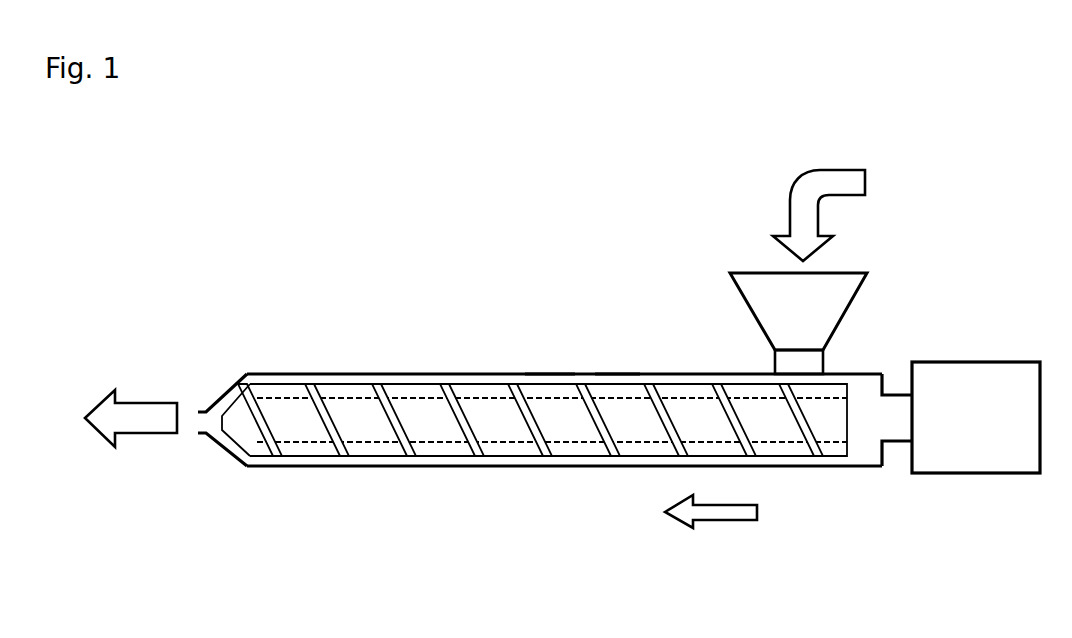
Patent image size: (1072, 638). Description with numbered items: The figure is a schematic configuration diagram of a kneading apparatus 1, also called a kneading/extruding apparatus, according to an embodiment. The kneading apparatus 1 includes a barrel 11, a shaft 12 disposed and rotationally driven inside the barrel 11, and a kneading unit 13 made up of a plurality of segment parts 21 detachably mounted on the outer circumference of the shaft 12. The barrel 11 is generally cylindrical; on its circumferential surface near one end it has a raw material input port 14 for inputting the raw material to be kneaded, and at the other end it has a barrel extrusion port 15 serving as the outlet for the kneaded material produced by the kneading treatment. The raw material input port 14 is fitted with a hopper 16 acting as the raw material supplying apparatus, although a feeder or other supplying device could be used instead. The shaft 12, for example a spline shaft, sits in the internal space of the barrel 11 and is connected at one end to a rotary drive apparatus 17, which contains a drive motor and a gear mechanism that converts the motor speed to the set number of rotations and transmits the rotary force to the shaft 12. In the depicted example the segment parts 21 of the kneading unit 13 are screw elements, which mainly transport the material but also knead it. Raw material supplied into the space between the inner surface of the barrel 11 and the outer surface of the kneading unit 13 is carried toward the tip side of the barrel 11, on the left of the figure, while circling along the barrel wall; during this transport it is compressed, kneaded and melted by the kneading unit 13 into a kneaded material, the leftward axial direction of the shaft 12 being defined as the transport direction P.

The kneading apparatus 1 is at (911, 186).
The barrel 11 is at (413, 374).
The shaft 12 is at (577, 457).
The kneading unit 13 is at (464, 461).
The raw material input port 14 is at (824, 368).
The barrel extrusion port 15 is at (205, 436).
The hopper 16 is at (753, 312).
The rotary drive apparatus 17 is at (973, 474).
The segment parts 21 is at (552, 374).